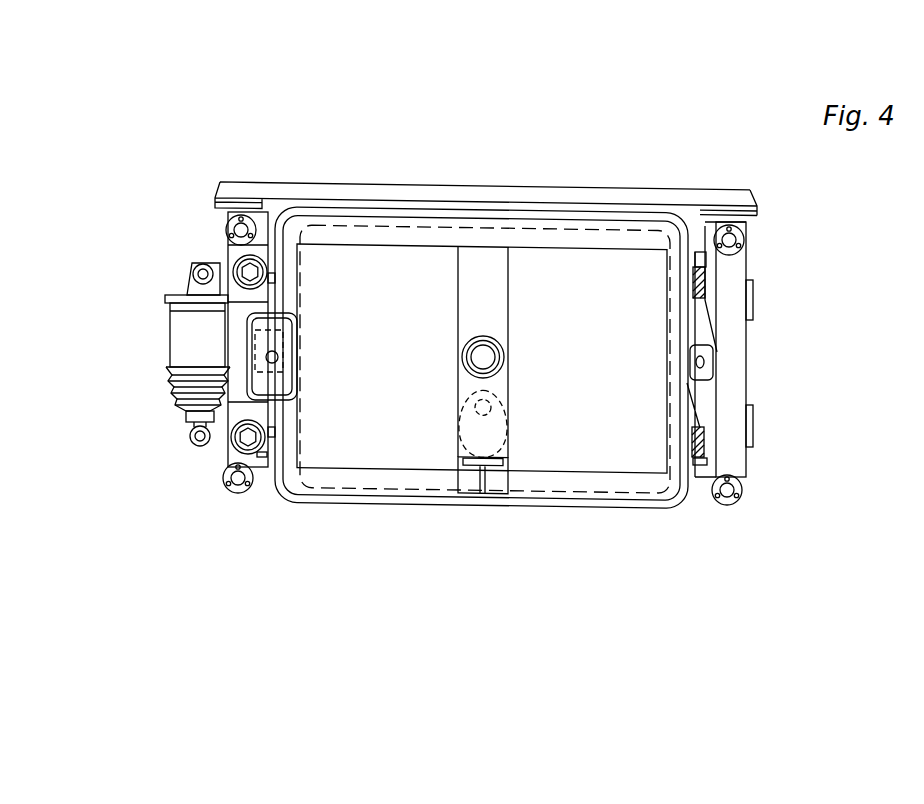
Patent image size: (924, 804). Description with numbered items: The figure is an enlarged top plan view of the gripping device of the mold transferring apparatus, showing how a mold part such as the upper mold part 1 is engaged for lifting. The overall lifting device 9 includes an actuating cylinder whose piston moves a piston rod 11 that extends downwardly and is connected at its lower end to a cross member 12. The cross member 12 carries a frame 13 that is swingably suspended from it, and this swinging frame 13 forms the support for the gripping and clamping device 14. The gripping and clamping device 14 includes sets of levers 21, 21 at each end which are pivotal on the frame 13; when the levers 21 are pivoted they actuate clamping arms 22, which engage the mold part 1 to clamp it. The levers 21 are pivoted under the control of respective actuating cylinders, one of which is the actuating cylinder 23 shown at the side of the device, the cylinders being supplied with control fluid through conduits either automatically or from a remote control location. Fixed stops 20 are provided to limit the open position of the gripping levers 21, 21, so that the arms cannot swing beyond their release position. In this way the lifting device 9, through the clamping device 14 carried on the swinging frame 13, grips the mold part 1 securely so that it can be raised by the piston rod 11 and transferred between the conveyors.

The upper mold part 1 is at (595, 503).
The lifting device 9 is at (406, 183).
The piston rod 11 is at (497, 358).
The cross member 12 is at (487, 272).
The frame 13 is at (232, 252).
The gripping and clamping device 14 is at (168, 330).
The fixed stops 20 is at (266, 256).
The levers 21 is at (225, 272).
The clamping arms 22 is at (702, 287).
The actuating cylinder 23 is at (193, 352).